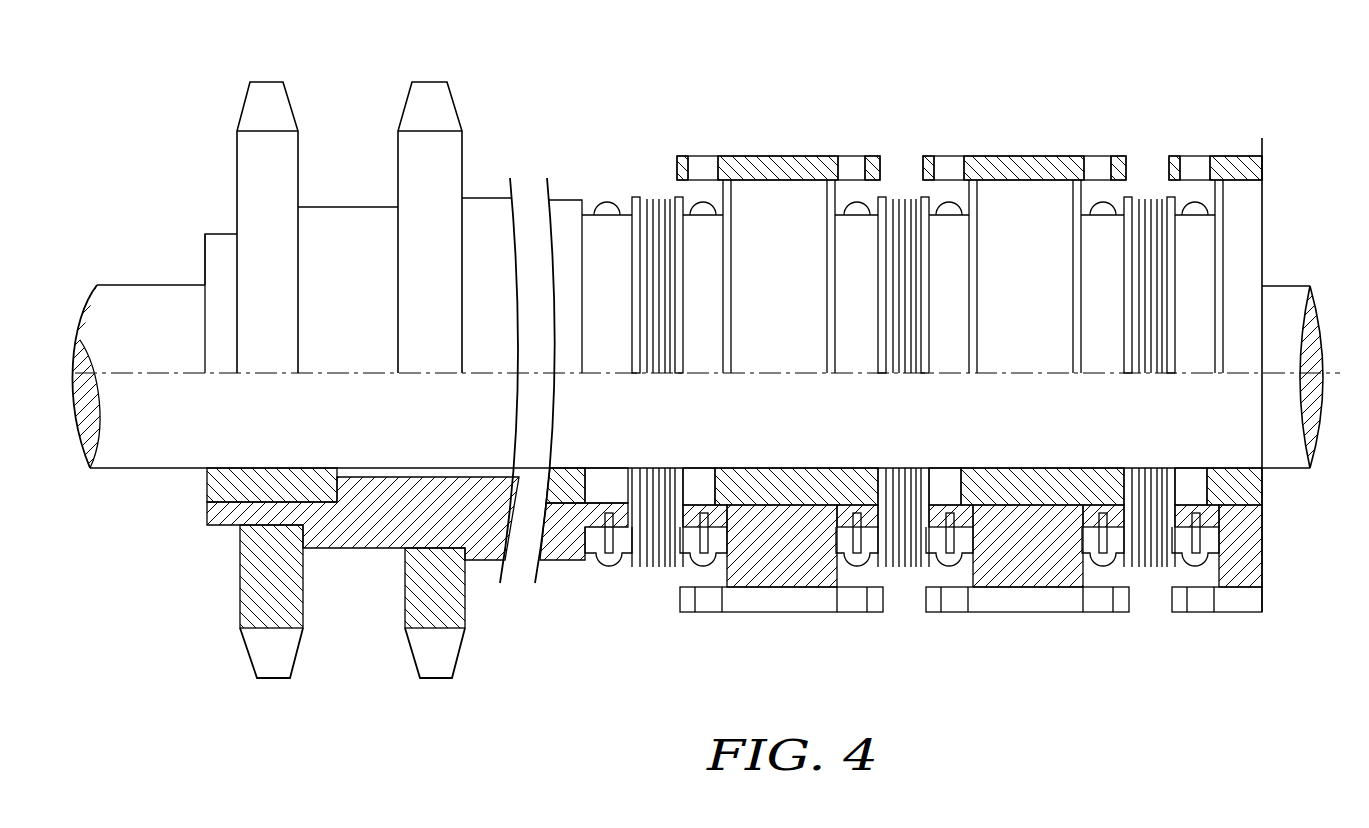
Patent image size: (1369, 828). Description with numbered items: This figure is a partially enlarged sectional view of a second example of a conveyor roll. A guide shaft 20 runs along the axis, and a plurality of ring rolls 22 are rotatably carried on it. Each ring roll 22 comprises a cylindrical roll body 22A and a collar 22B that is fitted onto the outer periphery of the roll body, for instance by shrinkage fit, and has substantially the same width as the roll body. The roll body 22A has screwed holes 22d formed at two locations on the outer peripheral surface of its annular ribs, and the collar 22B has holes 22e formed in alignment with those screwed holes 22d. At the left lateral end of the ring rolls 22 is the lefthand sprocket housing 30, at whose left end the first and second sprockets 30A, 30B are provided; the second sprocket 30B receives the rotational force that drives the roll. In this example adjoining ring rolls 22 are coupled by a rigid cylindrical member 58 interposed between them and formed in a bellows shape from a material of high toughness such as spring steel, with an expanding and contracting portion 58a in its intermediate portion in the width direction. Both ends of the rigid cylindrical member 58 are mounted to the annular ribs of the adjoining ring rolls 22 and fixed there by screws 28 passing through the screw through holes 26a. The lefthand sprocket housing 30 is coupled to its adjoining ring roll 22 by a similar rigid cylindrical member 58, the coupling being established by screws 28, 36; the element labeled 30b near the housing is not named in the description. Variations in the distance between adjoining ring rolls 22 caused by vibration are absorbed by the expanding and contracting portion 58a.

The guide shaft 20 is at (130, 292).
The lefthand sprocket housing 30 is at (331, 204).
The first sprocket 30A is at (245, 151).
The second sprocket 30B is at (455, 152).
The hub pin 30b is at (604, 530).
The screw 36 is at (598, 202).
The rigid cylindrical member 58 is at (659, 190).
The expanding and contracting portion 58a is at (643, 205).
The screw through holes 26a is at (652, 567).
The screws 28 is at (700, 203).
The screwed holes 22d is at (703, 513).
The ring rolls 22 is at (777, 150).
The holes 22e is at (710, 156).
The roll body 22A is at (805, 570).
The collar 22B is at (767, 603).